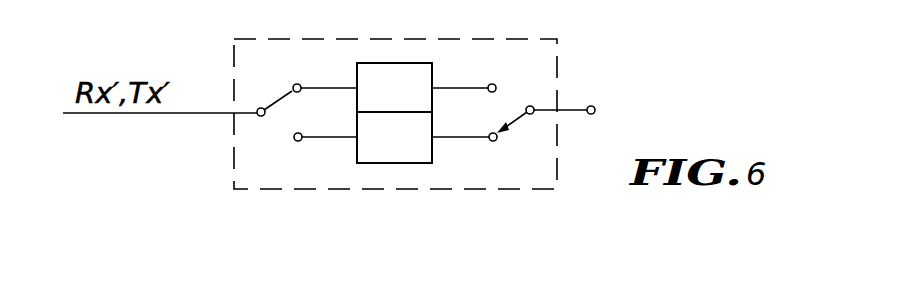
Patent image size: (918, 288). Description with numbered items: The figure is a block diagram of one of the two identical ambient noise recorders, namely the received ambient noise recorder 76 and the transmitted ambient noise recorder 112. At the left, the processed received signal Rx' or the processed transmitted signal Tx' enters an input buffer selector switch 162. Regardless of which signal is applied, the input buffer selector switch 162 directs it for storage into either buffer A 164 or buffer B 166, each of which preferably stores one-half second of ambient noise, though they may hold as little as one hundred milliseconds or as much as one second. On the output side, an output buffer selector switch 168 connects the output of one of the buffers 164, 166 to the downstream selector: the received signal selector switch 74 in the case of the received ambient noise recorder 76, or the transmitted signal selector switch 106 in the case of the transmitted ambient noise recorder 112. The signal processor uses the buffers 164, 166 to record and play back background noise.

The received ambient noise recorder 76 is at (395, 112).
The transmitted ambient noise recorder 112 is at (325, 37).
The input buffer selector switch 162 is at (280, 96).
The buffer A 164 is at (416, 99).
The buffer B 166 is at (420, 148).
The output buffer selector switch 168 is at (513, 122).
The received signal selector switch 74 is at (644, 83).
The transmitted signal selector switch 106 is at (595, 108).